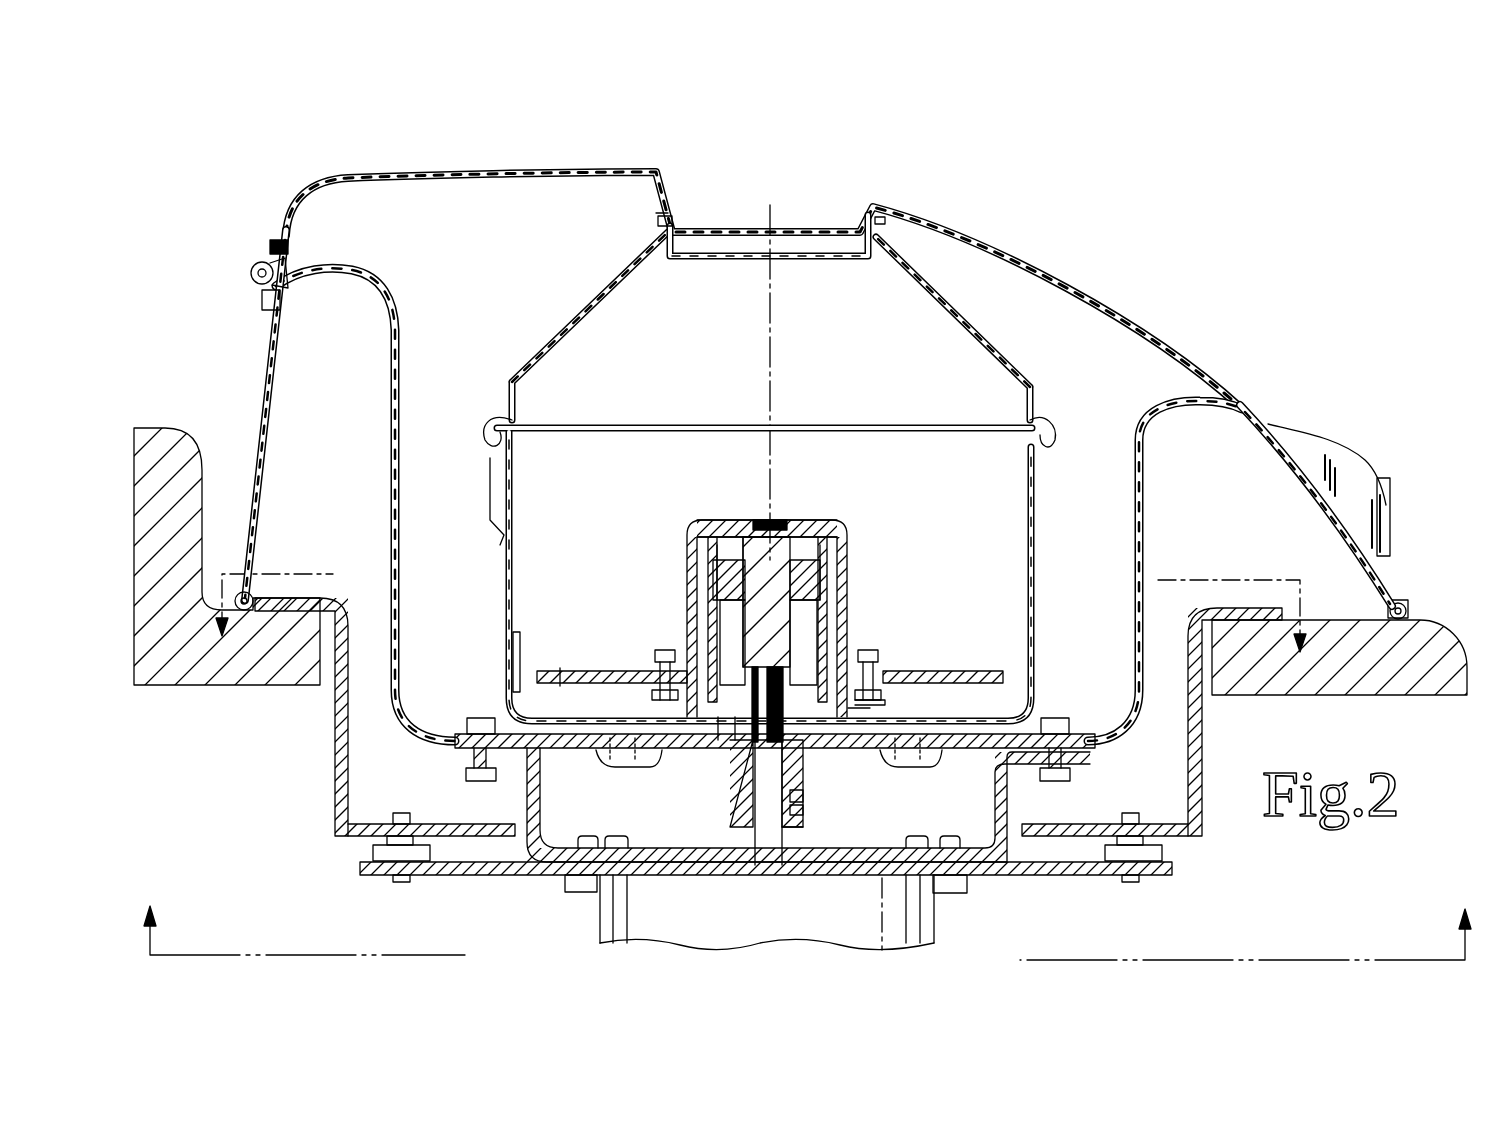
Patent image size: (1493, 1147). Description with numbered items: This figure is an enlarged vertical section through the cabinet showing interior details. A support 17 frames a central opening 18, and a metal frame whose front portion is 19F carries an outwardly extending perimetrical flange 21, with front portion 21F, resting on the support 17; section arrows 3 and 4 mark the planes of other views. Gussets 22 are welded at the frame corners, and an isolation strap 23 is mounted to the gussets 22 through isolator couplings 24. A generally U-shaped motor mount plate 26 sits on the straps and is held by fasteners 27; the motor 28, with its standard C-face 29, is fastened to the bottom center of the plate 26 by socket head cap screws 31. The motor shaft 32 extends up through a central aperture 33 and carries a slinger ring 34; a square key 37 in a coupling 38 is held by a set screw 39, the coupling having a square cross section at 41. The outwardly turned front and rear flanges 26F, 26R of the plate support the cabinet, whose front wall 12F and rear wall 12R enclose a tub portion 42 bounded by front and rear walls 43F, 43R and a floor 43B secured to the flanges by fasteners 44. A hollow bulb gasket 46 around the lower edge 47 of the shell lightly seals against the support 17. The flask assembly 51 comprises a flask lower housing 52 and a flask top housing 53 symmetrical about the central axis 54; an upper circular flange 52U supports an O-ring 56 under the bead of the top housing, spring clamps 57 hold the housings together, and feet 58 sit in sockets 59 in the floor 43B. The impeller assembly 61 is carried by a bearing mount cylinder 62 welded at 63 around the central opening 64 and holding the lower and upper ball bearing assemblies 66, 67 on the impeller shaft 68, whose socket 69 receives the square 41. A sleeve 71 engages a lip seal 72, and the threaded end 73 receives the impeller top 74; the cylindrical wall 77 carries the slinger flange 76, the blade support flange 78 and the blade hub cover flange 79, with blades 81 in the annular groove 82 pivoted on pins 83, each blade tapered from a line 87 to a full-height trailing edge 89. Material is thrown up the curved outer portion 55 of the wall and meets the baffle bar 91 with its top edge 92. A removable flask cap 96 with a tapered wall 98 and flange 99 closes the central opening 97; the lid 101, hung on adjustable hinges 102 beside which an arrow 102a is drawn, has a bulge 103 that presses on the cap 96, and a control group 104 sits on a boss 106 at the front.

The section line 3- 3 is at (807, 933).
The section line 4- 4 is at (762, 624).
The rear wall 12R is at (268, 378).
The front wall 12F is at (1308, 470).
The support 17 is at (256, 686).
The central opening 18 is at (328, 684).
The front portion of frame 19F is at (1202, 775).
The perimetrical flange 21 is at (322, 600).
The front portion of flange 21F is at (1232, 608).
The gusset 22 is at (1182, 840).
The isolation strap 23 is at (456, 876).
The isolator coupling 24 is at (385, 848).
The motor mount plate 26 is at (690, 852).
The rear flange 26R is at (465, 760).
The front flange 26F is at (1072, 762).
The fastener 27 is at (585, 836).
The motor 28 is at (897, 921).
The C-face 29 is at (862, 880).
The socket head cap screw 31 is at (620, 836).
The motor shaft 32 is at (765, 866).
The central aperture 33 is at (790, 866).
The slinger ring 34 is at (735, 865).
The square key 37 is at (804, 795).
The coupling 38 is at (806, 826).
The set screw 39 is at (806, 810).
The square cross section 41 is at (770, 670).
The tub portion 42 is at (1108, 441).
The rear wall of tub 43R is at (397, 340).
The front wall of tub 43F is at (1138, 550).
The floor of tub 43B is at (1030, 718).
The fastener 44 is at (478, 720).
The hollow bulb gasket 46 is at (250, 608).
The lower edge 47 is at (1406, 602).
The flask assembly 51 is at (692, 360).
The flask lower housing 52 is at (1032, 498).
The upper circular flange 52U is at (1040, 445).
The flask top housing 53 is at (978, 345).
The central axis 54 is at (770, 400).
The curved outer portion 55 is at (1022, 712).
The O-ring 56 is at (1047, 425).
The spring clamp 57 is at (486, 428).
The foot 58 is at (612, 760).
The socket 59 is at (640, 755).
The impeller assembly 61 is at (855, 524).
The bearing mount cylinder 62 is at (840, 570).
The weld 63 is at (803, 760).
The central opening 64 is at (718, 740).
The lower ball bearing assembly 66 is at (735, 748).
The upper ball bearing assembly 67 is at (828, 548).
The impeller shaft 68 is at (755, 540).
The internal spline 69 is at (725, 665).
The sleeve 71 is at (728, 560).
The lip seal 72 is at (722, 545).
The threaded upper end 73 is at (775, 518).
The impeller top 74 is at (820, 520).
The slinger flange 76 is at (870, 745).
The cylindrical wall 77 is at (840, 603).
The blade support flange 78 is at (880, 703).
The blade hub cover flange 79 is at (882, 672).
The blade 81 is at (556, 671).
The annular groove 82 is at (892, 680).
The pin 83 is at (655, 655).
The taper line 87 is at (890, 700).
The trailing edge 89 is at (572, 671).
The baffle bar 91 is at (513, 640).
The top edge 92 is at (512, 600).
The flask cap 96 is at (718, 216).
The central opening 97 is at (657, 226).
The tapered wall 98 is at (668, 240).
The circular flange 99 is at (655, 215).
The lid 101 is at (1000, 262).
The adjustable hinge 102 is at (253, 265).
The hinge motion arrow 102a is at (1280, 203).
The bulge 103 is at (810, 228).
The control group 104 is at (1398, 469).
The boss 106 is at (1330, 433).